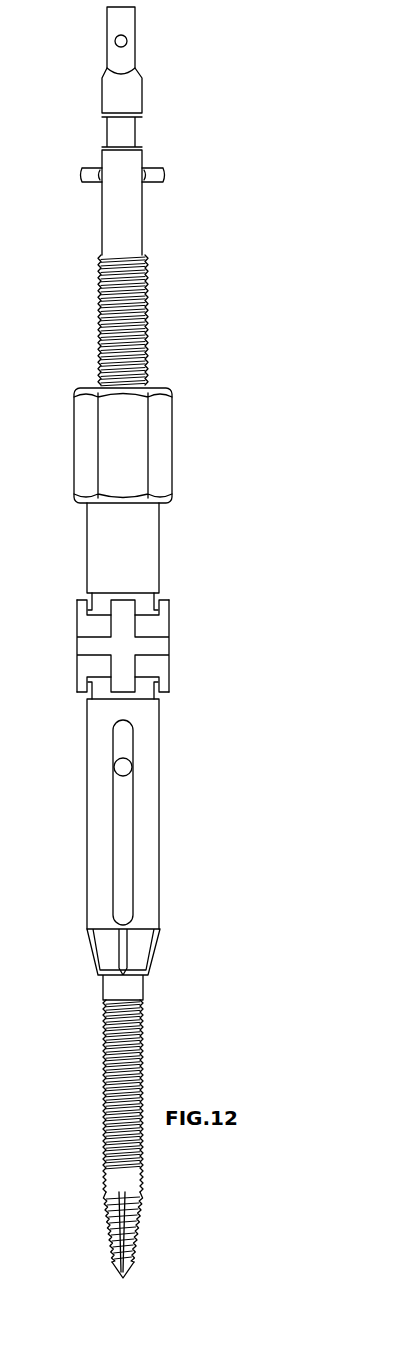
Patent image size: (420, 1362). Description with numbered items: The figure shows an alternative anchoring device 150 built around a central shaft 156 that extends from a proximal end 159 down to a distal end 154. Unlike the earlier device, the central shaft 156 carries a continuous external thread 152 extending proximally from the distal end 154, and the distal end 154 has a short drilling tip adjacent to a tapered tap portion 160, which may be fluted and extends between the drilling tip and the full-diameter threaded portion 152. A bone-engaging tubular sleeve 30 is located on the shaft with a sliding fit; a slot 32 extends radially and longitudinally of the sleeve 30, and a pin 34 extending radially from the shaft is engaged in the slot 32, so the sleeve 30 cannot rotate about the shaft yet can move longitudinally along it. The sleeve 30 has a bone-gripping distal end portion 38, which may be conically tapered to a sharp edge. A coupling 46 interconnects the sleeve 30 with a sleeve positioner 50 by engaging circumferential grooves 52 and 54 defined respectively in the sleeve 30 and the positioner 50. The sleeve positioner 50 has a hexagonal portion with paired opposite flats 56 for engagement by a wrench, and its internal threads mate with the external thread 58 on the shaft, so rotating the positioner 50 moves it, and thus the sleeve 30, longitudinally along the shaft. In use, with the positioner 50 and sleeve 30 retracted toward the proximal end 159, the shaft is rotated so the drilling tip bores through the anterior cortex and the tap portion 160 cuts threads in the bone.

The proximal end 159 is at (107, 40).
The central shaft 156 is at (102, 220).
The external thread 58 is at (148, 312).
The flats 56 is at (172, 445).
The sleeve positioner 50 is at (87, 550).
The circumferential groove 54 is at (143, 605).
The coupling 46 is at (170, 645).
The circumferential groove 52 is at (143, 688).
The tubular sleeve 30 is at (95, 748).
The slot 32 is at (130, 880).
The pin 34 is at (132, 767).
The bone-gripping distal end portion 38 is at (108, 955).
The continuous external thread 152 is at (103, 1093).
The tap portion 160 is at (112, 1236).
The distal end 154 is at (123, 1278).
The anchoring device 150 is at (220, 388).